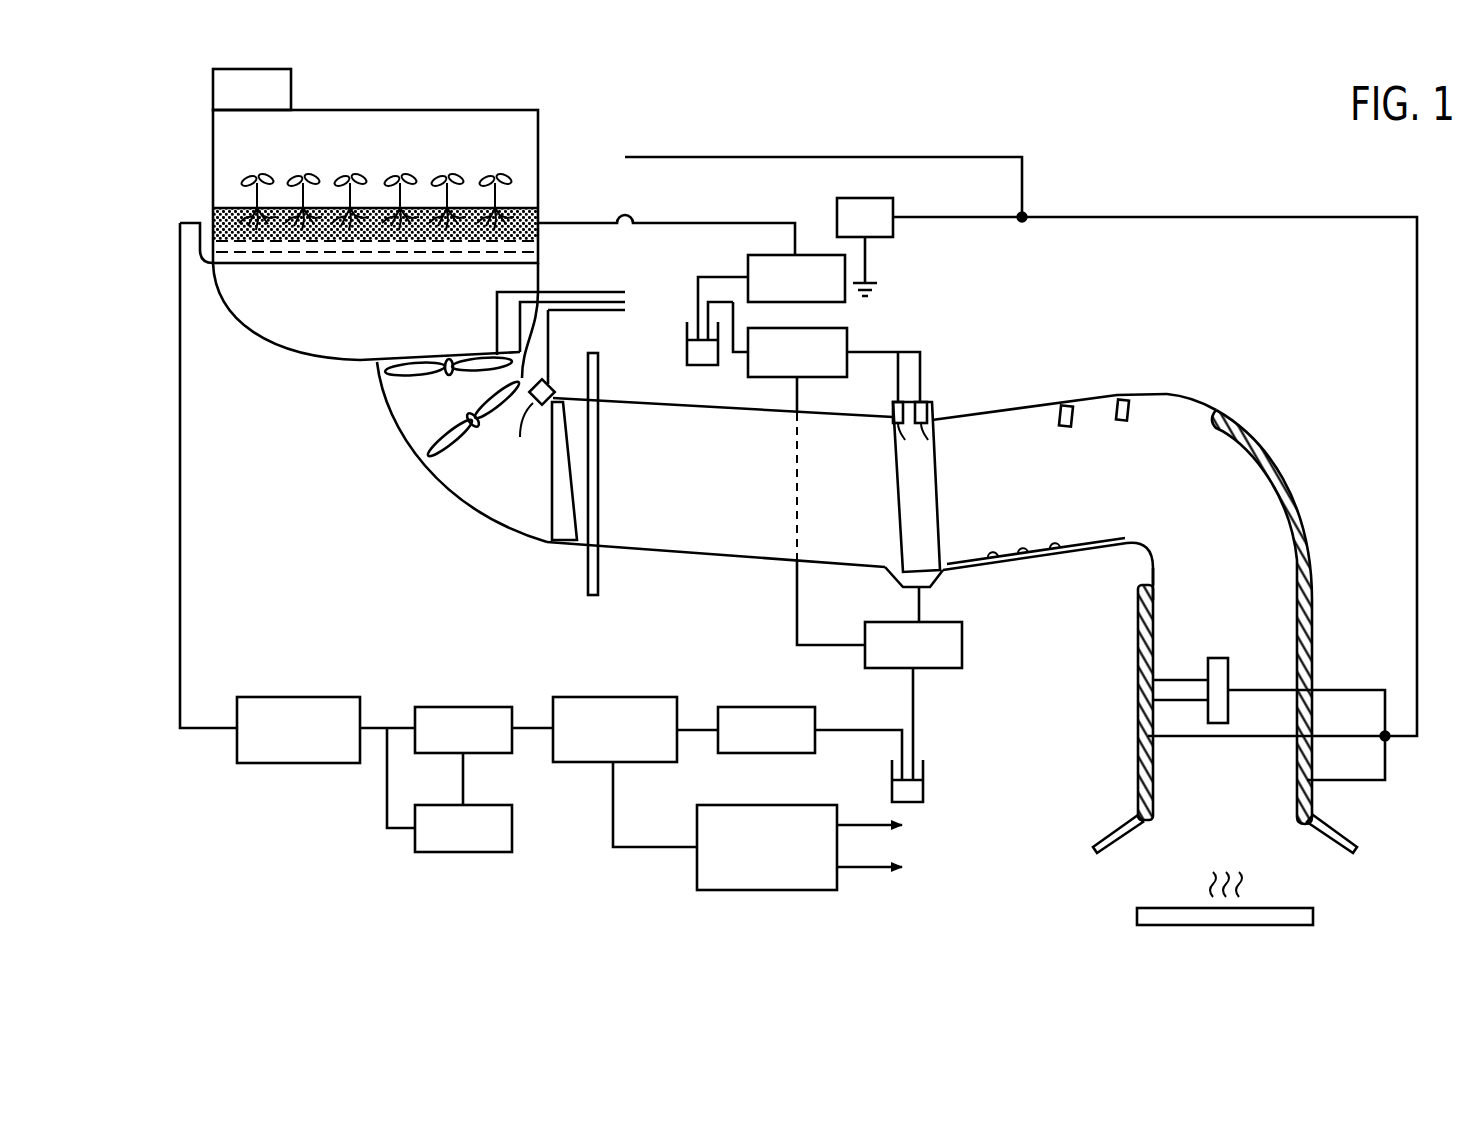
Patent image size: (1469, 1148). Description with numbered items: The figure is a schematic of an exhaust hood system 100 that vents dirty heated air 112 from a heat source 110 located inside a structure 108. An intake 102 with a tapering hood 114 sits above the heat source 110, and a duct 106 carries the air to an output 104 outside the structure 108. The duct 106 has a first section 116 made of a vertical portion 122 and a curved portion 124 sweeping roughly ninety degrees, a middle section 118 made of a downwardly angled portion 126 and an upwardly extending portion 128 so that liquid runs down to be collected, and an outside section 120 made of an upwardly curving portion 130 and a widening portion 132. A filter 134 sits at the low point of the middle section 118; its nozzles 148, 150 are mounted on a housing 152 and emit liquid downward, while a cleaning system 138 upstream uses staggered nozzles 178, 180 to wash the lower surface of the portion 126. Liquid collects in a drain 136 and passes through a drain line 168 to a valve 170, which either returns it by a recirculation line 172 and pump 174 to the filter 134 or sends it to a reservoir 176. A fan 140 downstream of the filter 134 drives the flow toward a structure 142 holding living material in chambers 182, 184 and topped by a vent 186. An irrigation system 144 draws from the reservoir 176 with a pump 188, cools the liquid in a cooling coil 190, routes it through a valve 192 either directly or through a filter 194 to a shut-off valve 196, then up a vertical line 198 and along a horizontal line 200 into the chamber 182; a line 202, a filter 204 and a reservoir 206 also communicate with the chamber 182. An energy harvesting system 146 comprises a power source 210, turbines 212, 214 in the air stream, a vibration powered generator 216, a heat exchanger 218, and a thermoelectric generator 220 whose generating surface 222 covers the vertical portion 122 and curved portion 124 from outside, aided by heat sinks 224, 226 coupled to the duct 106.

The exhaust hood system 100 is at (242, 818).
The intake 102 is at (1300, 858).
The output 104 is at (430, 277).
The duct 106 is at (1202, 408).
The structure 108 is at (587, 582).
The heat source 110 is at (1137, 913).
The dirty heated air 112 is at (1203, 880).
The hood 114 is at (1120, 830).
The section 116 is at (1128, 730).
The section 118 is at (753, 633).
The section 120 is at (375, 438).
The vertical portion 122 is at (1147, 660).
The curved portion 124 is at (1273, 460).
The portion 126 is at (1018, 397).
The portion 128 is at (727, 557).
The portion 130 is at (450, 503).
The portion 132 is at (240, 350).
The filter 134 is at (880, 480).
The drain 136 is at (950, 583).
The cleaning system 138 is at (1082, 378).
The fan 140 is at (565, 533).
The structure 142 is at (405, 95).
The irrigation system 144 is at (412, 890).
The energy harvesting system 146 is at (1075, 180).
The nozzle 148 is at (893, 438).
The nozzle 150 is at (927, 432).
The housing 152 is at (915, 503).
The drain line 168 is at (915, 605).
The valve 170 is at (897, 670).
The recirculation line 172 is at (795, 587).
The pump 174 is at (847, 340).
The reservoir 176 is at (890, 768).
The nozzle 178 is at (1067, 427).
The nozzle 180 is at (1123, 422).
The chamber 182 is at (233, 220).
The chamber 184 is at (213, 130).
The vent 186 is at (213, 90).
The pump 188 is at (767, 753).
The cooling coil 190 is at (597, 697).
The valve 192 is at (463, 707).
The filter 194 is at (463, 853).
The shut-off valve 196 is at (303, 697).
The vertical line 198 is at (180, 517).
The horizontal line 200 is at (200, 250).
The line 202 is at (580, 222).
The filter 204 is at (748, 265).
The reservoir 206 is at (685, 332).
The power source 210 is at (877, 227).
The turbine 212 is at (427, 478).
The turbine 214 is at (398, 375).
The vibration powered generator 216 is at (533, 403).
The heat exchanger 218 is at (695, 870).
The thermoelectric generator 220 is at (1250, 672).
The generating surface 222 is at (1147, 683).
The heat sink 224 is at (1210, 655).
The heat sink 226 is at (1178, 698).